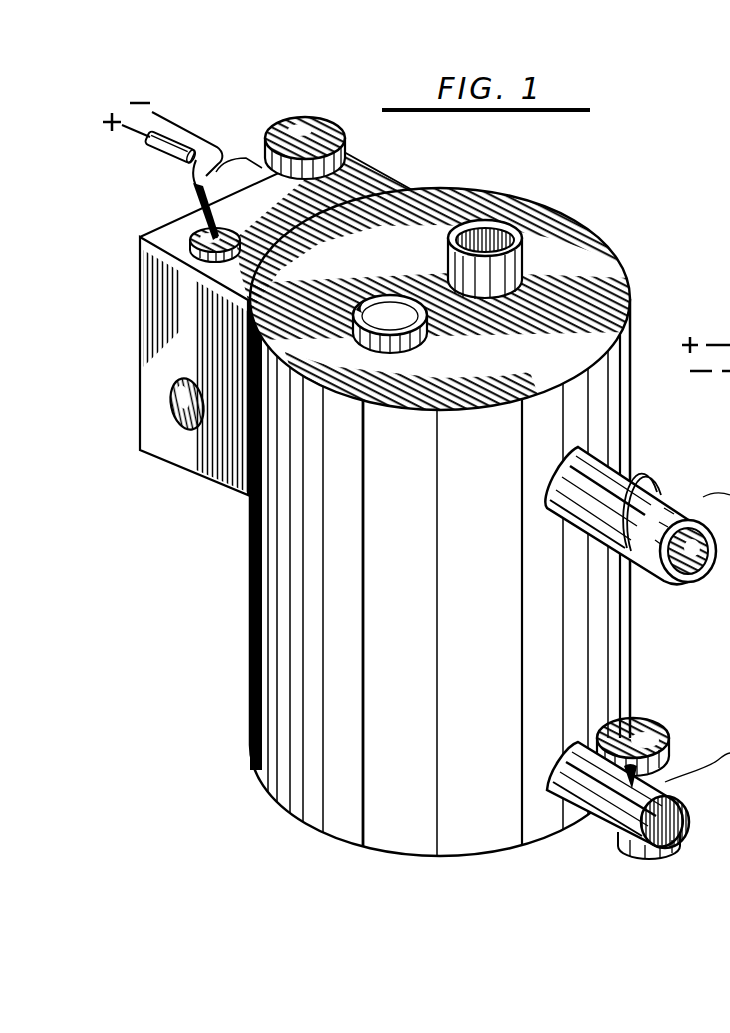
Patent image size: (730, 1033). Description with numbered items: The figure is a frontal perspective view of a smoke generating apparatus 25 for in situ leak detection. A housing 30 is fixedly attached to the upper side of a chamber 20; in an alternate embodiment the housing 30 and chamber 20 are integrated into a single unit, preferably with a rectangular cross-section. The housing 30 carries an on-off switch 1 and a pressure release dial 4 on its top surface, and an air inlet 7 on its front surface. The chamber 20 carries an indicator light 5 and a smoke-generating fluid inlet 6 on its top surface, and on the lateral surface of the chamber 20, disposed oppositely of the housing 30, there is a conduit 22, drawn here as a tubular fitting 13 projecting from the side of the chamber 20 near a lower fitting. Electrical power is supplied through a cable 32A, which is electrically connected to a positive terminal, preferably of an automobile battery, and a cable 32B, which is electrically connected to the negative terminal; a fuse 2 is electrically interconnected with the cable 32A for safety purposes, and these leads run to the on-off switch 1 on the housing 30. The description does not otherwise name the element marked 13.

The on-off switch 1 is at (199, 196).
The fuse 2 is at (160, 158).
The pressure release dial 4 is at (290, 125).
The indicator light 5 is at (420, 322).
The smoke-generating fluid inlet 6 is at (525, 270).
The air inlet 7 is at (168, 437).
The tubular fitting 13 is at (642, 480).
The chamber 20 is at (250, 758).
The conduit 22 is at (712, 548).
The smoke generating apparatus 25 is at (555, 205).
The housing 30 is at (218, 478).
The cable 32A is at (126, 128).
The cable 32B is at (152, 112).